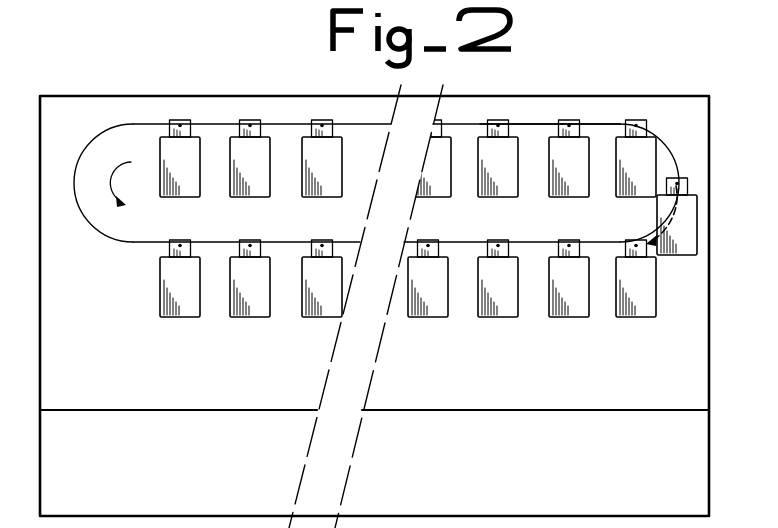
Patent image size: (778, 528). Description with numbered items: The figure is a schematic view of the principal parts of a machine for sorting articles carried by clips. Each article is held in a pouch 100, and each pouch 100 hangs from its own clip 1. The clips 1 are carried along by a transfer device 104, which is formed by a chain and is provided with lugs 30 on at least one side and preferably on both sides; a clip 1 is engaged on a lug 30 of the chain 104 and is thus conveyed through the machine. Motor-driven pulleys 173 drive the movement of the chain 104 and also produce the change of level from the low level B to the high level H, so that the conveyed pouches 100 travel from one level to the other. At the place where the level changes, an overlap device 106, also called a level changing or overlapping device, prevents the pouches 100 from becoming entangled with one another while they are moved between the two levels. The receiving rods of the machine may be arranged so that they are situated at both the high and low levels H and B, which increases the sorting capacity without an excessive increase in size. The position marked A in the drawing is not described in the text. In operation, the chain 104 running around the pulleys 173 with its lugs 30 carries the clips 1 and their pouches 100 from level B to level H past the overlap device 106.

The clip 1 is at (177, 161).
The lug 30 is at (177, 122).
The pouch 100 is at (183, 177).
The transfer device 104 is at (348, 104).
The overlap device 106 is at (680, 224).
The motor-driven pulley 173 is at (106, 214).
The high level H is at (550, 111).
The position A on conveyor A is at (656, 183).
The low level B is at (376, 257).